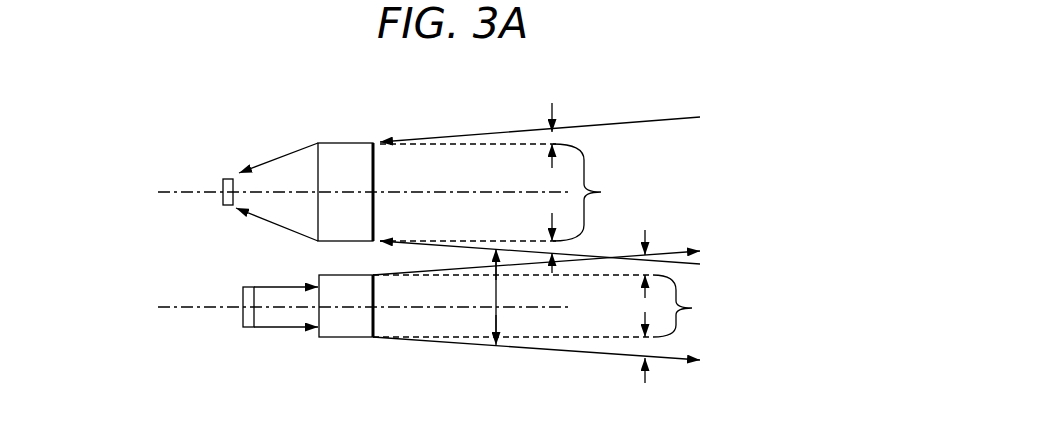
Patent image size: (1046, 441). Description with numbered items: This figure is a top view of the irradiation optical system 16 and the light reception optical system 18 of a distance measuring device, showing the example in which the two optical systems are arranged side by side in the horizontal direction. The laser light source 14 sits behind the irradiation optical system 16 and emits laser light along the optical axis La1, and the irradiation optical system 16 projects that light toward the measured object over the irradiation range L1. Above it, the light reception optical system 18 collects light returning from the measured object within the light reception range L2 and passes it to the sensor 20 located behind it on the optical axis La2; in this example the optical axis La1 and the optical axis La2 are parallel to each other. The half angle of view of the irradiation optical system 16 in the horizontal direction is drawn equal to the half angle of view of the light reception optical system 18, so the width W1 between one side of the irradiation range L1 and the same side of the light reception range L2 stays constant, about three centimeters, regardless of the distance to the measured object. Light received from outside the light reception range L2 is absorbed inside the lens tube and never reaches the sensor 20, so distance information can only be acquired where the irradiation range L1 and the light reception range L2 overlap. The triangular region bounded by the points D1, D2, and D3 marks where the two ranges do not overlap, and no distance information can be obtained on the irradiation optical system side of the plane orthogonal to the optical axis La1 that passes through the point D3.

The laser light source 14 is at (247, 315).
The irradiation optical system 16 is at (350, 328).
The light reception optical system 18 is at (345, 150).
The sensor 20 is at (223, 198).
The optical axis La1 is at (197, 305).
The optical axis La2 is at (197, 191).
The irradiation range L1 is at (540, 348).
The light reception range L2 is at (615, 124).
The point D1 is at (377, 240).
The point D2 is at (377, 277).
The point D3 is at (601, 262).
The width W1 is at (496, 318).